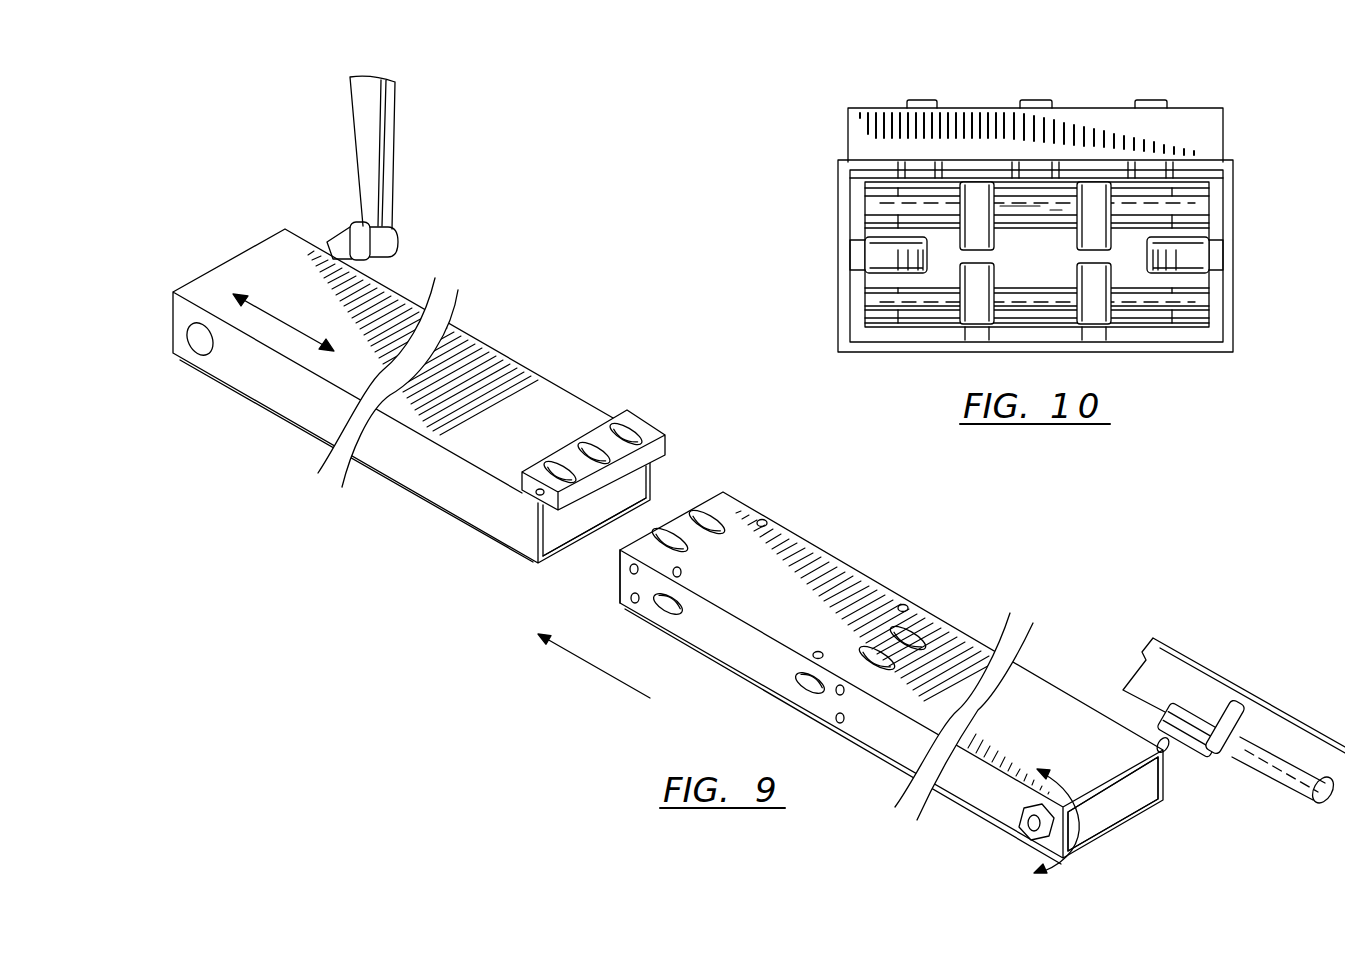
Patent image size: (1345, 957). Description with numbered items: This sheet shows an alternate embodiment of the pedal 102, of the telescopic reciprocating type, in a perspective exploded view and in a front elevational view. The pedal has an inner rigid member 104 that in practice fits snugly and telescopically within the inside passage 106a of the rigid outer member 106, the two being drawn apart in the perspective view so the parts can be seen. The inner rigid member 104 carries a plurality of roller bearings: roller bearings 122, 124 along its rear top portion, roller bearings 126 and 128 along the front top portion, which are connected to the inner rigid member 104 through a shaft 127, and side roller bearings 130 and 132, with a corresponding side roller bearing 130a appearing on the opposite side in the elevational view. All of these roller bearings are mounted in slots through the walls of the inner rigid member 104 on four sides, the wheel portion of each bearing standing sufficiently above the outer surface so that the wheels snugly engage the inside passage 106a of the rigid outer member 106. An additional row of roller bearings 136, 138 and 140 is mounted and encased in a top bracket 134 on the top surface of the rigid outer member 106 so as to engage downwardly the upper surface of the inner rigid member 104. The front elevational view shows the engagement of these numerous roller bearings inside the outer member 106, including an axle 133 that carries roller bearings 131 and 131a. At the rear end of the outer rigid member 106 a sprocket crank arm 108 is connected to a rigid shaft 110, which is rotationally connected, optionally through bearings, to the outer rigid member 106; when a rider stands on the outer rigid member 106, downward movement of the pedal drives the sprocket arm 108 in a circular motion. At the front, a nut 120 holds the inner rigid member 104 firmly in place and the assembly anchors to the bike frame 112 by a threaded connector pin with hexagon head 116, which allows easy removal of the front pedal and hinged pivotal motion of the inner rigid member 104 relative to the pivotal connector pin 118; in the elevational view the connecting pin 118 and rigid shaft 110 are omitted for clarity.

In FIG. 9, the slide assembly 102 is at (593, 382).
In FIG. 9, the inner rigid member 104 is at (808, 547).
In FIG. 10, the inner rigid member 104 is at (1213, 307).
In FIG. 9, the rigid outer member 106 is at (463, 343).
In FIG. 10, the rigid outer member 106 is at (1232, 215).
In FIG. 9, the inside passage 106a is at (650, 492).
In FIG. 9, the sprocket crank arm 108 is at (385, 140).
In FIG. 9, the rigid shaft 110 is at (333, 235).
In FIG. 9, the bike frame 112 is at (1188, 670).
In FIG. 9, the threaded connector pin with hexagon head 116 is at (1187, 745).
In FIG. 9, the pivotal connector pin 118 is at (1113, 792).
In FIG. 9, the nut 120 is at (1017, 827).
In FIG. 9, the roller bearing 122 is at (693, 520).
In FIG. 9, the roller bearing 124 is at (622, 552).
In FIG. 9, the roller bearing 126 is at (913, 638).
In FIG. 10, the roller bearing 126 is at (1098, 222).
In FIG. 9, the shaft 127 is at (838, 694).
In FIG. 10, the shaft 127 is at (1058, 213).
In FIG. 9, the roller bearing 128 is at (882, 665).
In FIG. 10, the roller bearing 128 is at (978, 203).
In FIG. 9, the side roller bearing 130 is at (812, 688).
In FIG. 10, the side roller bearing 130 is at (873, 260).
In FIG. 10, the tab 130a is at (1197, 253).
In FIG. 10, the roller bearing 131 is at (977, 297).
In FIG. 10, the roller bearing 131a is at (1098, 297).
In FIG. 9, the side roller bearing 132 is at (670, 607).
In FIG. 10, the axle 133 is at (1177, 302).
In FIG. 9, the top bracket 134 is at (655, 432).
In FIG. 10, the top bracket 134 is at (1203, 108).
In FIG. 9, the roller bearing 136 is at (627, 433).
In FIG. 10, the roller bearing 136 is at (1150, 101).
In FIG. 9, the roller bearing 138 is at (594, 450).
In FIG. 10, the roller bearing 138 is at (1033, 99).
In FIG. 9, the roller bearing 140 is at (535, 460).
In FIG. 10, the roller bearing 140 is at (922, 99).